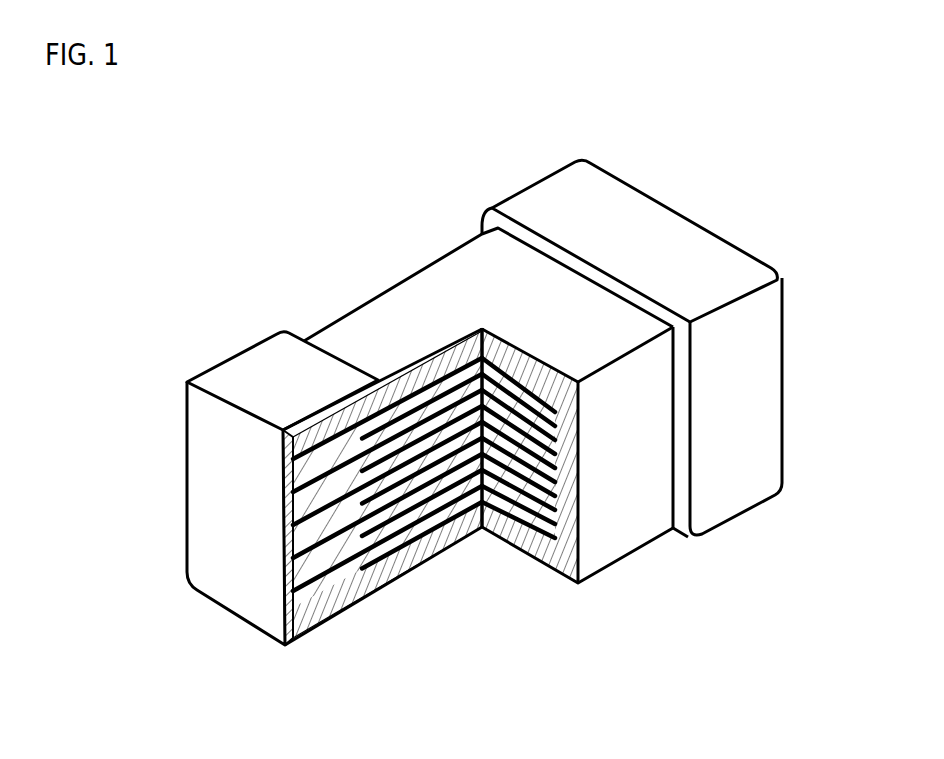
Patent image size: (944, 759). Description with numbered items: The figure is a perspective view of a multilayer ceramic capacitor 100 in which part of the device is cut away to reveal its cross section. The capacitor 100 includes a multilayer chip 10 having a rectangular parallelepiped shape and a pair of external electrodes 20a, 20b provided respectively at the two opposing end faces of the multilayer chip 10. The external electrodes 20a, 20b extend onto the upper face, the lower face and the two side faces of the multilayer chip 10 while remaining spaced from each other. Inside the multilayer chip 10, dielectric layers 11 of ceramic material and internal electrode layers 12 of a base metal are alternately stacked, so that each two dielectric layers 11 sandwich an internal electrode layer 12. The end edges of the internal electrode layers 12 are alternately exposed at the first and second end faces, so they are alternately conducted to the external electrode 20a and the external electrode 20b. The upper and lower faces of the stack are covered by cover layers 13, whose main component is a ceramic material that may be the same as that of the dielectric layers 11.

The multilayer ceramic capacitor 100 is at (877, 89).
The multilayer chip 10 is at (328, 325).
The dielectric layer 11 is at (413, 517).
The internal electrode layer 12 is at (380, 545).
The cover layer 13 is at (452, 270).
The external electrode 20a is at (217, 363).
The external electrode 20b is at (537, 198).